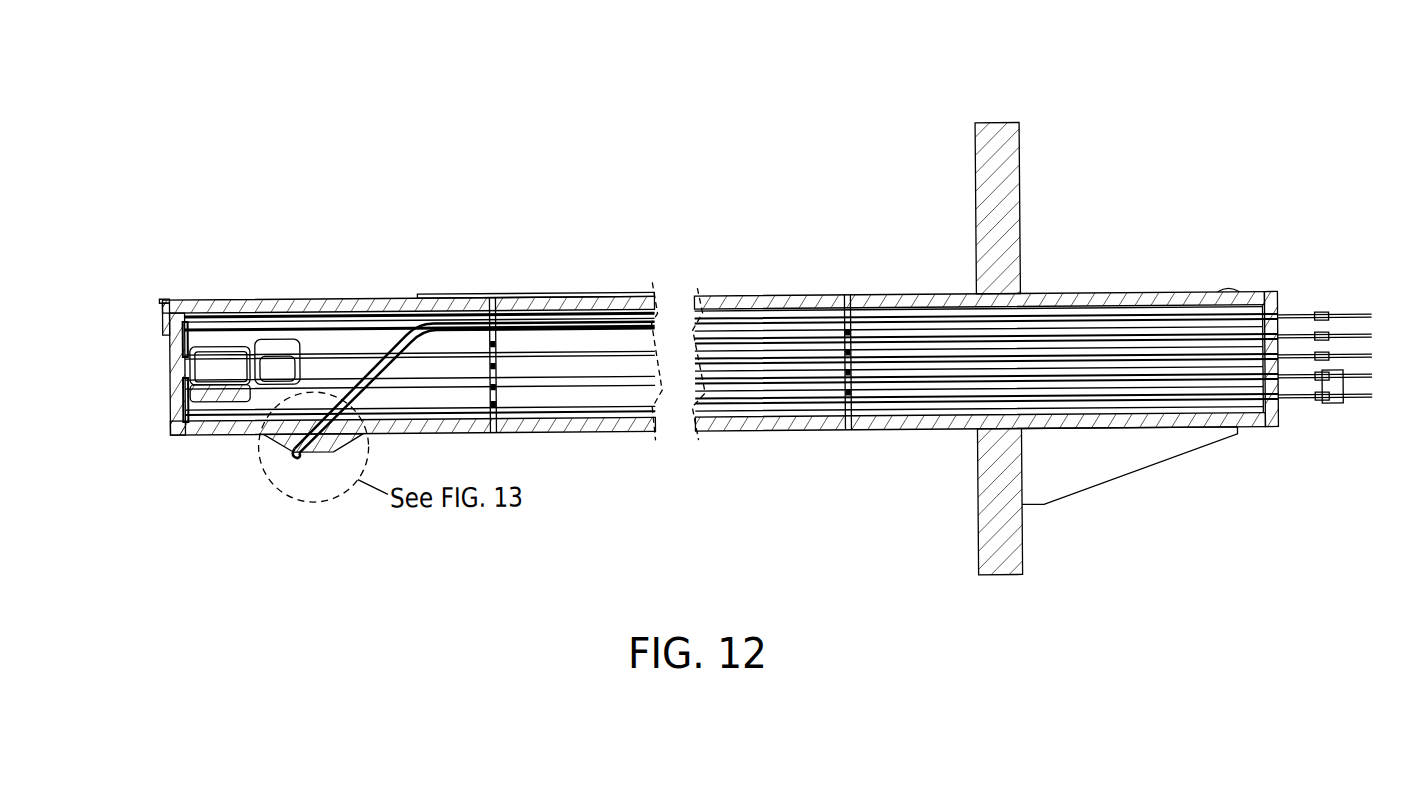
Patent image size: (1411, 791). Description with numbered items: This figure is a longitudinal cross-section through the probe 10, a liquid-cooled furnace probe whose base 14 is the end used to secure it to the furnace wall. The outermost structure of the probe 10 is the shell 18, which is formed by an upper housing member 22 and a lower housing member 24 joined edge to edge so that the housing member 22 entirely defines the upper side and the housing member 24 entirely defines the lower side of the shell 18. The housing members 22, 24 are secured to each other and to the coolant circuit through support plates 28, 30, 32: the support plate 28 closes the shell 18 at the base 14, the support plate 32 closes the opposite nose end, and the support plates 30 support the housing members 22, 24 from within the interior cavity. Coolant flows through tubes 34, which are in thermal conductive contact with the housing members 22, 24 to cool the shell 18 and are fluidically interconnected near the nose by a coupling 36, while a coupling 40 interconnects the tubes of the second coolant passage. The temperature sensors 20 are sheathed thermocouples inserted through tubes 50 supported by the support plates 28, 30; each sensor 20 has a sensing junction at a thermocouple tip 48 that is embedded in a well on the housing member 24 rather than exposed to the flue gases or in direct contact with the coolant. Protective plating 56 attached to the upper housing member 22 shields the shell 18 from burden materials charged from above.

The probe 10 is at (494, 94).
The base 14 is at (1022, 172).
The shell 18 is at (582, 292).
The temperature sensors 20 is at (293, 464).
The housing member 22 is at (912, 296).
The housing member 24 is at (903, 431).
The support plate 28 is at (1277, 316).
The support plates 30 is at (497, 402).
The support plate 32 is at (173, 385).
The tubes 34 is at (322, 332).
The coupling 36 is at (213, 343).
The coupling 40 is at (272, 337).
The thermocouple tips 48 is at (293, 452).
The tubes 50 is at (405, 332).
The protective plating 56 is at (187, 296).